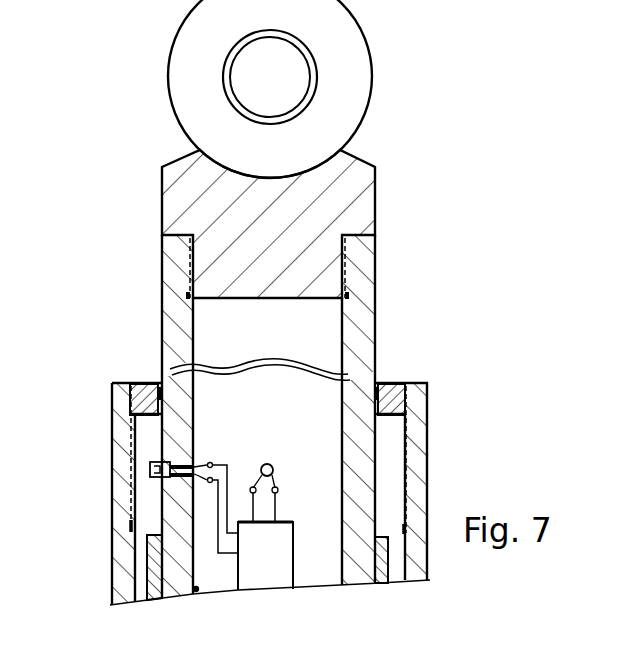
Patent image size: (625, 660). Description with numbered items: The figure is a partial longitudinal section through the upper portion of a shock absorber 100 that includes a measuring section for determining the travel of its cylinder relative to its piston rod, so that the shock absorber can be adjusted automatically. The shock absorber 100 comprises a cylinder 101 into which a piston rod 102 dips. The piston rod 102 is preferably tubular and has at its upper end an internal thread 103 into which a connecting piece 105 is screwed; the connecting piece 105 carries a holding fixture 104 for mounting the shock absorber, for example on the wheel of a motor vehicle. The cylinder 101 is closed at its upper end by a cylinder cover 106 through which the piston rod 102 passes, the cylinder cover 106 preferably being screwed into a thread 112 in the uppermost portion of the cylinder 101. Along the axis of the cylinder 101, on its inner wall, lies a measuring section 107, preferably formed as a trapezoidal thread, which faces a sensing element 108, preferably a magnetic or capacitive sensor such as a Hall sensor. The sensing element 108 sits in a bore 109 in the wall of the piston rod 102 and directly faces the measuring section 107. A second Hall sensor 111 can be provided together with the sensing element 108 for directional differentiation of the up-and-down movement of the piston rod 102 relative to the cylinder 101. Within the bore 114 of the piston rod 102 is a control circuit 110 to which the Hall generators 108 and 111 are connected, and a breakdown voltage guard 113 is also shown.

The shock absorber 100 is at (456, 339).
The cylinder 101 is at (118, 547).
The piston rod 102 is at (170, 287).
The internal thread 103 is at (188, 257).
The holding fixture 104 is at (362, 58).
The connecting piece 105 is at (365, 186).
The cylinder cover 106 is at (148, 387).
The measuring section 107 is at (420, 445).
The sensing element 108 is at (150, 466).
The bore 109 is at (194, 466).
The control circuit 110 is at (267, 583).
The Hall sensor 111 is at (270, 464).
The thread 112 is at (115, 404).
The breakdown voltage guard 113 is at (382, 584).
The bore 114 is at (196, 592).